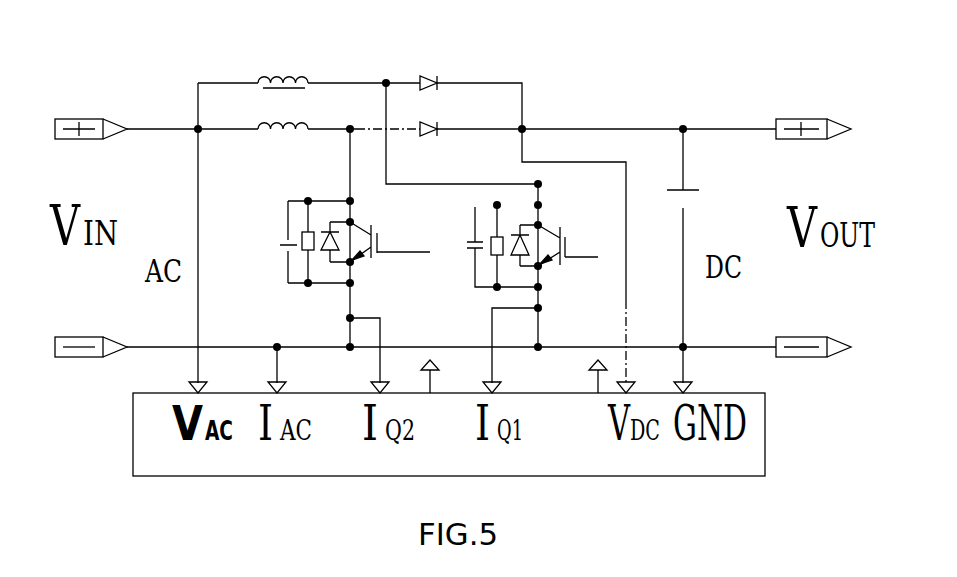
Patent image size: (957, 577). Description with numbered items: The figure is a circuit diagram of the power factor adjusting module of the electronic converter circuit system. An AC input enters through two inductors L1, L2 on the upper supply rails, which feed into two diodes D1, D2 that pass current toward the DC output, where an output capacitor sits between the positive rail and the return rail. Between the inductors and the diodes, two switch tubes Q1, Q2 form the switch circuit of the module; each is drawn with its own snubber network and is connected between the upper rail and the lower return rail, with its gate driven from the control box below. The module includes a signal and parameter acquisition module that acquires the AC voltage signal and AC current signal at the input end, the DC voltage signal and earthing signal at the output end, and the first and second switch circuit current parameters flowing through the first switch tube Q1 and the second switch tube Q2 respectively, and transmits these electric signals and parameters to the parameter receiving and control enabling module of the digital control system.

The inductor L1 is at (283, 65).
The inductor L2 is at (283, 145).
The diode D1 is at (430, 65).
The diode D2 is at (430, 145).
The first switch tube Q1 is at (537, 246).
The second switch tube Q2 is at (355, 242).